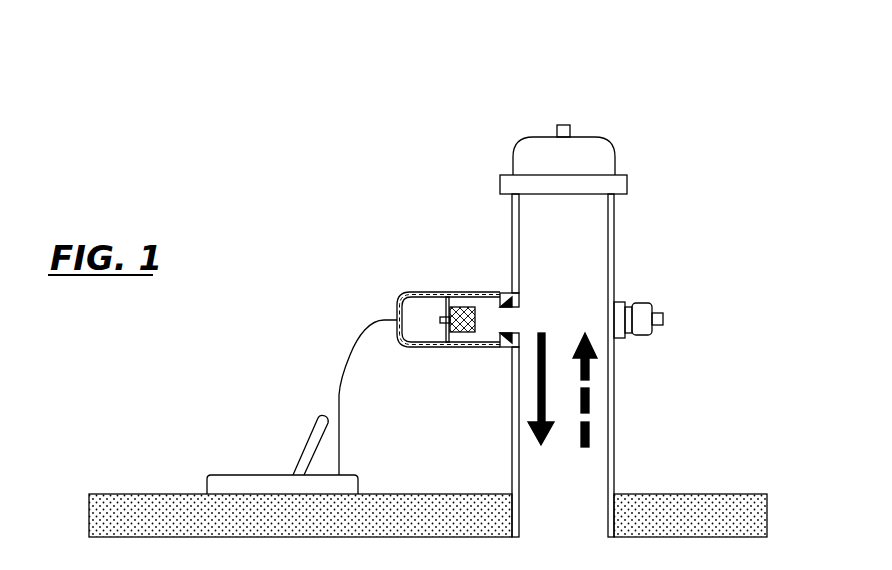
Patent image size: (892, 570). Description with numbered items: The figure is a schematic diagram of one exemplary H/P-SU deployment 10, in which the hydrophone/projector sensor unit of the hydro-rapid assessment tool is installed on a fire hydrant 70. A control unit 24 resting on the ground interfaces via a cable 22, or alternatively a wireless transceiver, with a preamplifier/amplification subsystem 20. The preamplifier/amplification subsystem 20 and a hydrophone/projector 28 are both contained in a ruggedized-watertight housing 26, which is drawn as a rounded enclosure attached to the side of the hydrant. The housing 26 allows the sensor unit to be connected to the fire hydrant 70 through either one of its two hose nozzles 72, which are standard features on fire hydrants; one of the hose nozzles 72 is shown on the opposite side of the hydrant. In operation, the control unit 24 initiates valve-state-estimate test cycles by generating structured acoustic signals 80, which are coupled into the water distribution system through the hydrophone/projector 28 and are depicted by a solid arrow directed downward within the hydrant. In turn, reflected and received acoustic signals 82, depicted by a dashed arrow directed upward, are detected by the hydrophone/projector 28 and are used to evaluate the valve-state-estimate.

The H/P-SU deployment 10 is at (463, 118).
The preamplifier/amplification subsystem 20 is at (415, 310).
The cable 22 is at (340, 365).
The control unit 24 is at (237, 470).
The ruggedized-watertight housing 26 is at (467, 350).
The hydrophone/projector 28 is at (465, 302).
The fire hydrant 70 is at (642, 152).
The hose nozzles 72 is at (640, 300).
The structured acoustic signals 80 is at (551, 326).
The reflected and received acoustic signals 82 is at (597, 476).